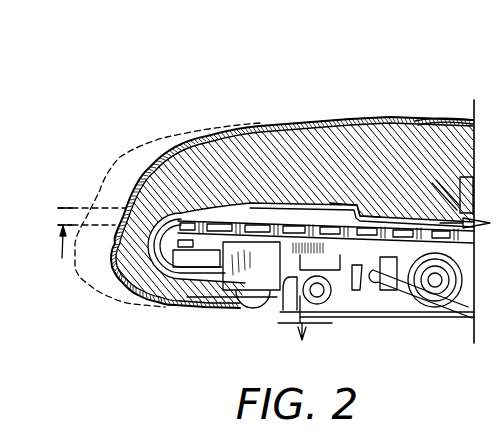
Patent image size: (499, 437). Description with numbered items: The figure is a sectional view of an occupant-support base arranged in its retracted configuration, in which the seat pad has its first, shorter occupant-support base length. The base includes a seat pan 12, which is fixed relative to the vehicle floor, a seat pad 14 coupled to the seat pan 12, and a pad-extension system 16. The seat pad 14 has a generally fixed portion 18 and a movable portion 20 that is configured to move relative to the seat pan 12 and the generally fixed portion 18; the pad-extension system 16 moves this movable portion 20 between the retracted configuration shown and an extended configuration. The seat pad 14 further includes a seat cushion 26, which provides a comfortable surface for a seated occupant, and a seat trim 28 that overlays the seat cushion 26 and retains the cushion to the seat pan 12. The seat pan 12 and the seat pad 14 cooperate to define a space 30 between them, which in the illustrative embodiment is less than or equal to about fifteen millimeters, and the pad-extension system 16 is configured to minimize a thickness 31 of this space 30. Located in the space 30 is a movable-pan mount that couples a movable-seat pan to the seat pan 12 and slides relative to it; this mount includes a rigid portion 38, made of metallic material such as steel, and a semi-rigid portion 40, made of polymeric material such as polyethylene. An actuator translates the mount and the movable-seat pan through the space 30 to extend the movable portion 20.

The seat pan 12 is at (265, 244).
The seat pad 14 is at (275, 119).
The pad-extension system 16 is at (172, 208).
The generally fixed portion 18 is at (450, 118).
The movable portion 20 is at (134, 298).
The seat cushion 26 is at (234, 149).
The seat trim 28 is at (170, 158).
The space 30 is at (342, 218).
The thickness 31 is at (63, 207).
The rigid portion 38 is at (443, 242).
The semi-rigid portion 40 is at (403, 238).